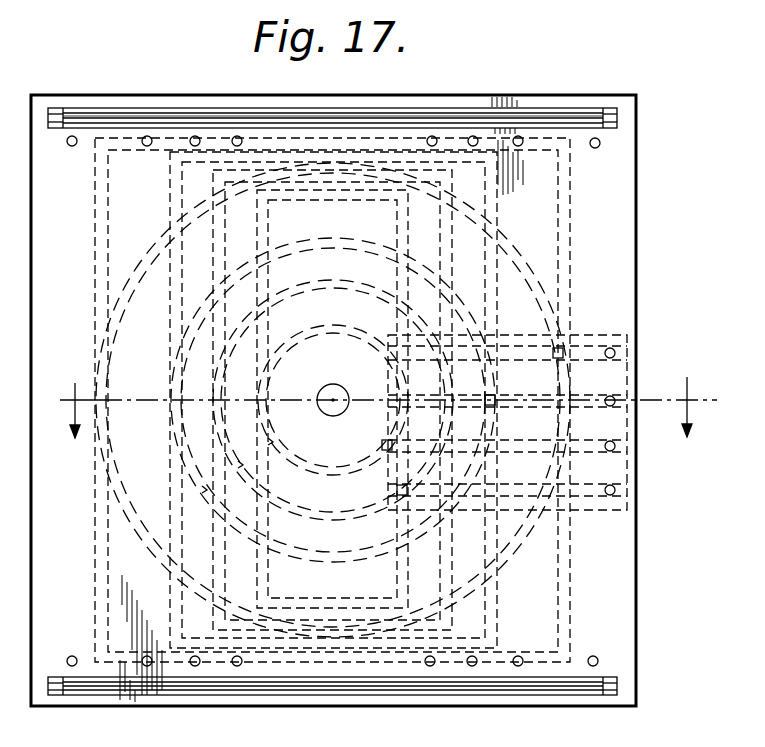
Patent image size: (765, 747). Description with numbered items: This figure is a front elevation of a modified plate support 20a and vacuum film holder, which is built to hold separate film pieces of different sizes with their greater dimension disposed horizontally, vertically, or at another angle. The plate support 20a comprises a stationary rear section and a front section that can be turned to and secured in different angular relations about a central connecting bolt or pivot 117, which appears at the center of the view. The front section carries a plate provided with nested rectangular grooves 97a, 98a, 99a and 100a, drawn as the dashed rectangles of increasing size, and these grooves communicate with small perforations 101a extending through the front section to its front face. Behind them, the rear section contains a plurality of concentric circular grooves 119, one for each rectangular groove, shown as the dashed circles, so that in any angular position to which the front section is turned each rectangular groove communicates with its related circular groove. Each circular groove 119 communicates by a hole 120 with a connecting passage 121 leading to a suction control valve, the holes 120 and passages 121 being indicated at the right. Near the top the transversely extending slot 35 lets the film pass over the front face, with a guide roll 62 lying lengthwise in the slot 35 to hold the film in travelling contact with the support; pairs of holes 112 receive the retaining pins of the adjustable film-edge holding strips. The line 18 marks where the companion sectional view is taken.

The section line 18 is at (391, 407).
The plate support 20a is at (690, 198).
The transverse slot 35 is at (601, 79).
The guide roll 62 is at (473, 113).
The rectangular groove 97a is at (404, 212).
The rectangular groove 98a is at (445, 218).
The rectangular groove 99a is at (492, 216).
The rectangular groove 100a is at (562, 238).
The perforations 101a is at (223, 222).
The holes 112 is at (476, 146).
The central connecting bolt or pivot 117 is at (345, 382).
The concentric circular grooves 119 is at (273, 442).
The hole 120 is at (552, 352).
The connecting passage 121 is at (582, 396).